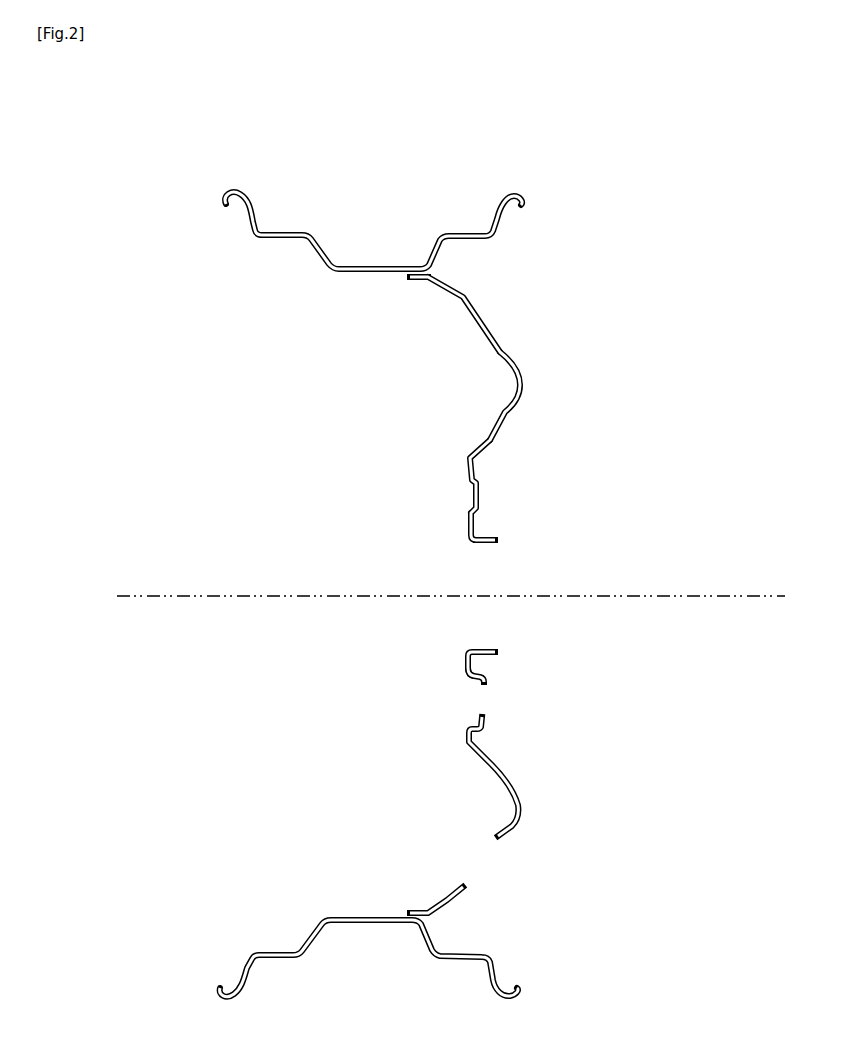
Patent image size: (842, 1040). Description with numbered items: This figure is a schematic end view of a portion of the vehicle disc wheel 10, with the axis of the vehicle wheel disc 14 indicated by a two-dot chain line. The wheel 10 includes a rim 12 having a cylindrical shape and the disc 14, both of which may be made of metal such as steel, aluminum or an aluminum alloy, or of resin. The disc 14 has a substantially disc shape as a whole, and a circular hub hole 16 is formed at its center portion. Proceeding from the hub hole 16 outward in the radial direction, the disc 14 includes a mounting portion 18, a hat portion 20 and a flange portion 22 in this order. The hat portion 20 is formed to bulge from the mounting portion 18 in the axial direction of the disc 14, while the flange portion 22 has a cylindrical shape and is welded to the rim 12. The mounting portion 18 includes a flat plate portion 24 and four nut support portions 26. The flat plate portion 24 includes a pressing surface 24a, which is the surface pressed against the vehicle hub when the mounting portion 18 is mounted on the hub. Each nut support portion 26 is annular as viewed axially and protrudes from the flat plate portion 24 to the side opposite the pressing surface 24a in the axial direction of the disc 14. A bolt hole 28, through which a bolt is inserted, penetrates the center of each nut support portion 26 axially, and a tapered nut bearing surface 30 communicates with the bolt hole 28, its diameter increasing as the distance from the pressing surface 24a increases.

The vehicle disc wheel 10 is at (699, 153).
The rim 12 is at (528, 188).
The vehicle wheel disc 14 is at (515, 332).
The hub hole 16 is at (485, 546).
The mounting portion 18 is at (476, 470).
The hat portion 20 is at (524, 385).
The flange portion 22 is at (413, 281).
The flat plate portion 24 is at (476, 518).
The pressing surface 24a is at (466, 526).
The nut support portion 26 is at (488, 672).
The bolt hole 28 is at (469, 683).
The nut bearing surface 30 is at (486, 720).